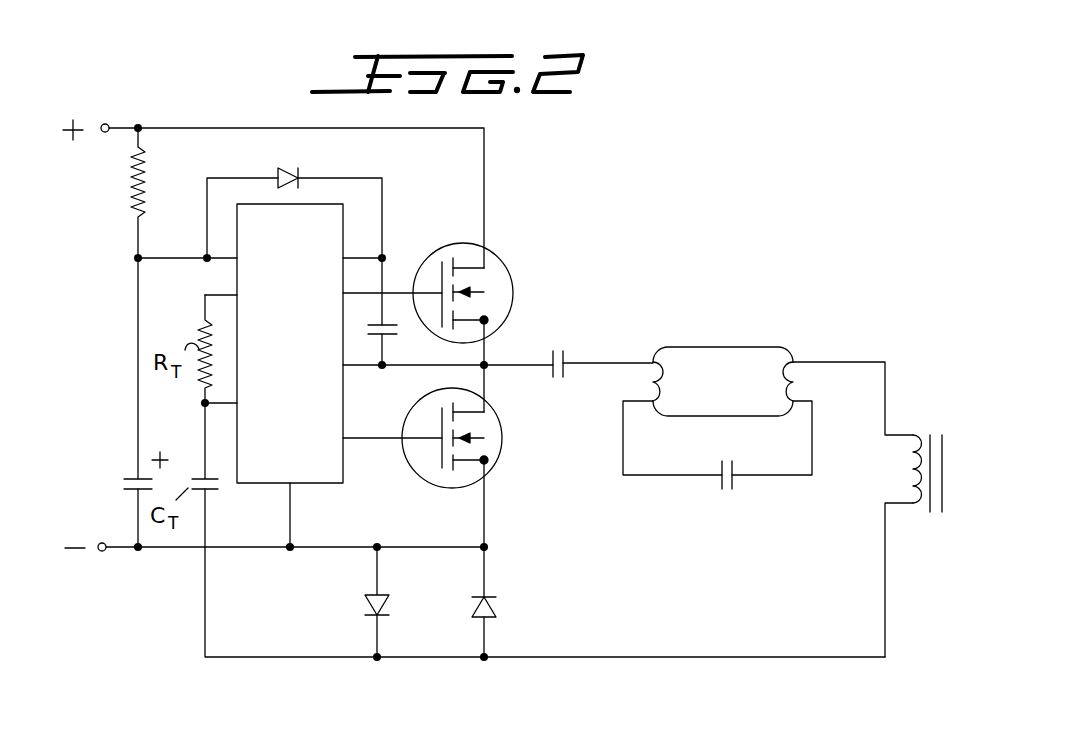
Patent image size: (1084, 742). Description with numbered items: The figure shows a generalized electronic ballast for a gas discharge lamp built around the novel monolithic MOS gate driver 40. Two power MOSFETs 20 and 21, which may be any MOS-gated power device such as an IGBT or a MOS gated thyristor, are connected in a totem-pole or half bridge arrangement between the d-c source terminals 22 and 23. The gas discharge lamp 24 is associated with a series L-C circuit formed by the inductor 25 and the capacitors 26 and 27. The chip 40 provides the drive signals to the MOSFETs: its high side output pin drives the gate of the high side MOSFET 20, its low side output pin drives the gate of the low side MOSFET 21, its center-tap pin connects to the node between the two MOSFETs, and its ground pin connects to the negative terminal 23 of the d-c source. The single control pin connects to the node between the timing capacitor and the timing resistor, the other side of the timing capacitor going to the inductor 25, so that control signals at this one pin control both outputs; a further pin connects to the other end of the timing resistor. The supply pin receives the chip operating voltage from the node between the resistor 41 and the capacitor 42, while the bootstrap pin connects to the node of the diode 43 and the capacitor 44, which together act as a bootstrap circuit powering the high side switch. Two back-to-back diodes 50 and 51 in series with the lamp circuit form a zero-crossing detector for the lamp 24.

The high side power MOSFET 20 is at (503, 270).
The low side power MOSFET 21 is at (503, 440).
The d-c source terminal 22 is at (104, 124).
The negative terminal of the d-c source 23 is at (104, 550).
The gas discharge lamp 24 is at (707, 346).
The inductor 25 is at (905, 465).
The series L-C circuit capacitor 26 is at (556, 345).
The series L-C circuit capacitor 27 is at (730, 495).
The monolithic MOS gate driver 40 is at (315, 485).
The resistor 41 is at (137, 188).
The capacitor 42 is at (130, 478).
The diode 43 is at (288, 168).
The capacitor 44 is at (400, 333).
The diode 50 is at (366, 602).
The diode 51 is at (495, 600).